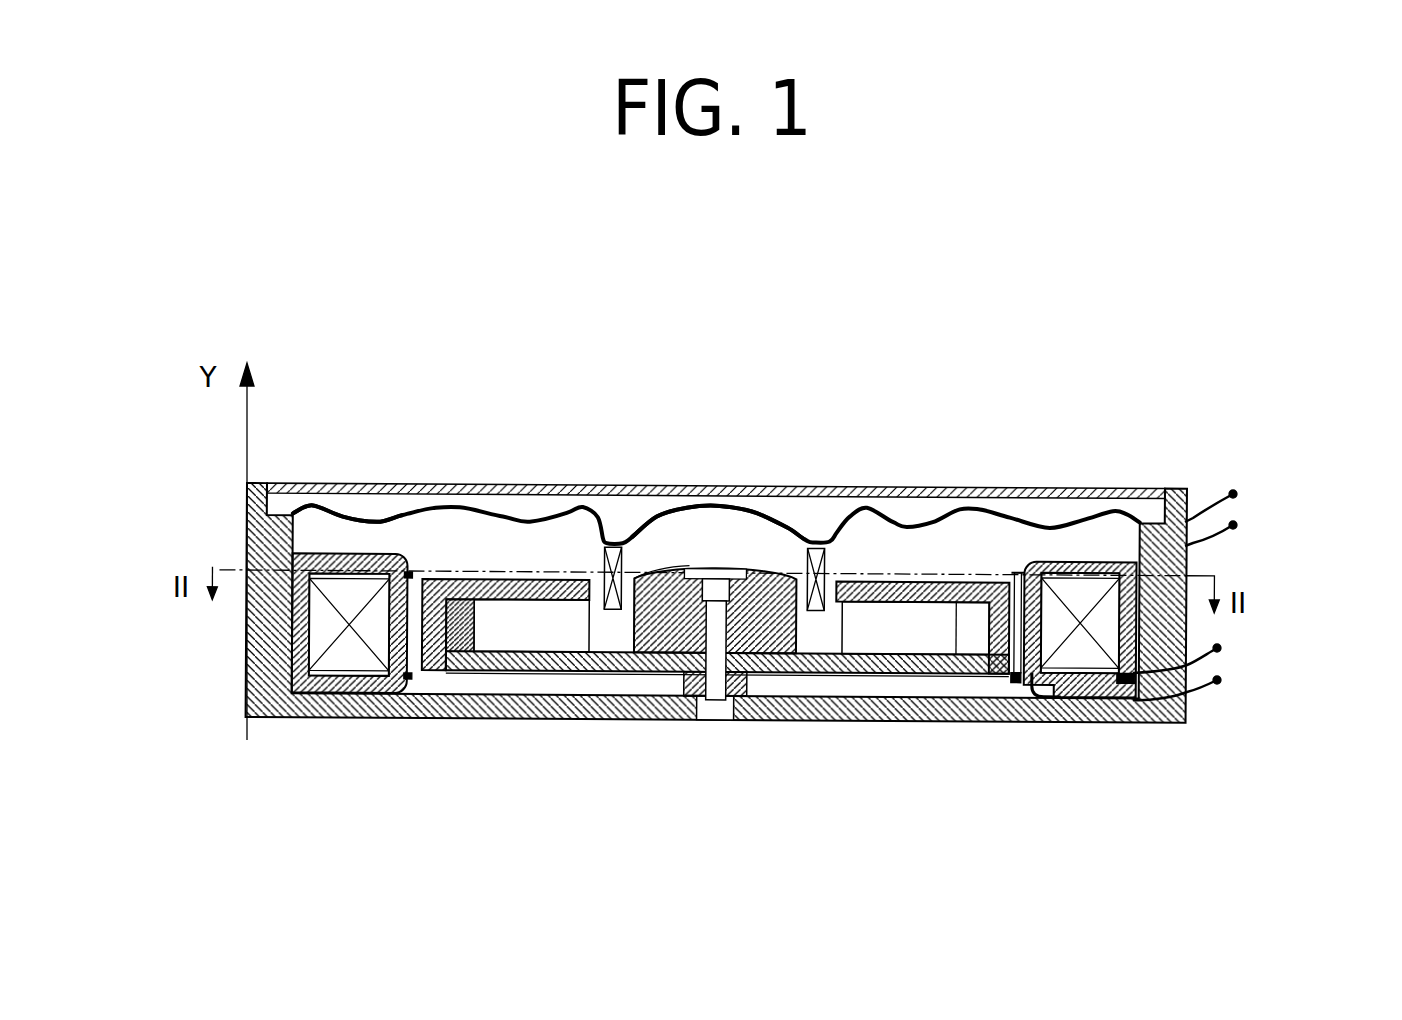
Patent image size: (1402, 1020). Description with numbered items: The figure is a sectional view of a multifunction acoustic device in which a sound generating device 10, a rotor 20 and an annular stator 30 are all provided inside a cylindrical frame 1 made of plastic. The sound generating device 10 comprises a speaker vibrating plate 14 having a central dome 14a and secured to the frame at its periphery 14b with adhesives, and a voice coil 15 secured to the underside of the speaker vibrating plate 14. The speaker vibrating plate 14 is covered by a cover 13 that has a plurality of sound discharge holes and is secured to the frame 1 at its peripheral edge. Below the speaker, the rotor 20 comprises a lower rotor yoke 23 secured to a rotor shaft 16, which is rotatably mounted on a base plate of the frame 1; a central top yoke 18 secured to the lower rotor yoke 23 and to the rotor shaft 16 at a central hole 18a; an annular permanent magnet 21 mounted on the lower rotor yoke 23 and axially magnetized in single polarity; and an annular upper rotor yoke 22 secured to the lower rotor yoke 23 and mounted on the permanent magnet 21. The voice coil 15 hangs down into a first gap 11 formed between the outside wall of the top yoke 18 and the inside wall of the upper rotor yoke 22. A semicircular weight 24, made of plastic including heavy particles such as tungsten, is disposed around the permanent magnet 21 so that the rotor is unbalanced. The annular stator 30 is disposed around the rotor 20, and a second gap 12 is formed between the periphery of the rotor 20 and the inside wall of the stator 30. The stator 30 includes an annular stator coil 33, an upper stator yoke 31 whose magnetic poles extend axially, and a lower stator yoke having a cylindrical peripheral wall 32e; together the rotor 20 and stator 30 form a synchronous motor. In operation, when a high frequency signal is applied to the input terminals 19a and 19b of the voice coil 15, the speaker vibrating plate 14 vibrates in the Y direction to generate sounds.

The cylindrical frame 1 is at (272, 692).
The sound generating device 10 is at (391, 504).
The first gap 11 is at (630, 590).
The second gap 12 is at (1018, 573).
The cover 13 is at (770, 483).
The speaker vibrating plate 14 is at (907, 516).
The central dome 14a is at (722, 507).
The periphery 14b is at (333, 507).
The voice coil 15 is at (600, 587).
The rotor shaft 16 is at (714, 672).
The central top yoke 18 is at (777, 570).
The central hole 18a is at (748, 700).
The input terminal 19a is at (1233, 494).
The input terminal 19b is at (1233, 525).
The rotor 20 is at (945, 568).
The annular permanent magnet 21 is at (503, 633).
The annular upper rotor yoke 22 is at (550, 573).
The lower rotor yoke 23 is at (648, 673).
The semicircular weight 24 is at (460, 573).
The annular stator 30 is at (1106, 548).
The upper stator yoke 31 is at (1085, 562).
The cylindrical peripheral wall 32e is at (1128, 650).
The annular stator coil 33 is at (323, 632).